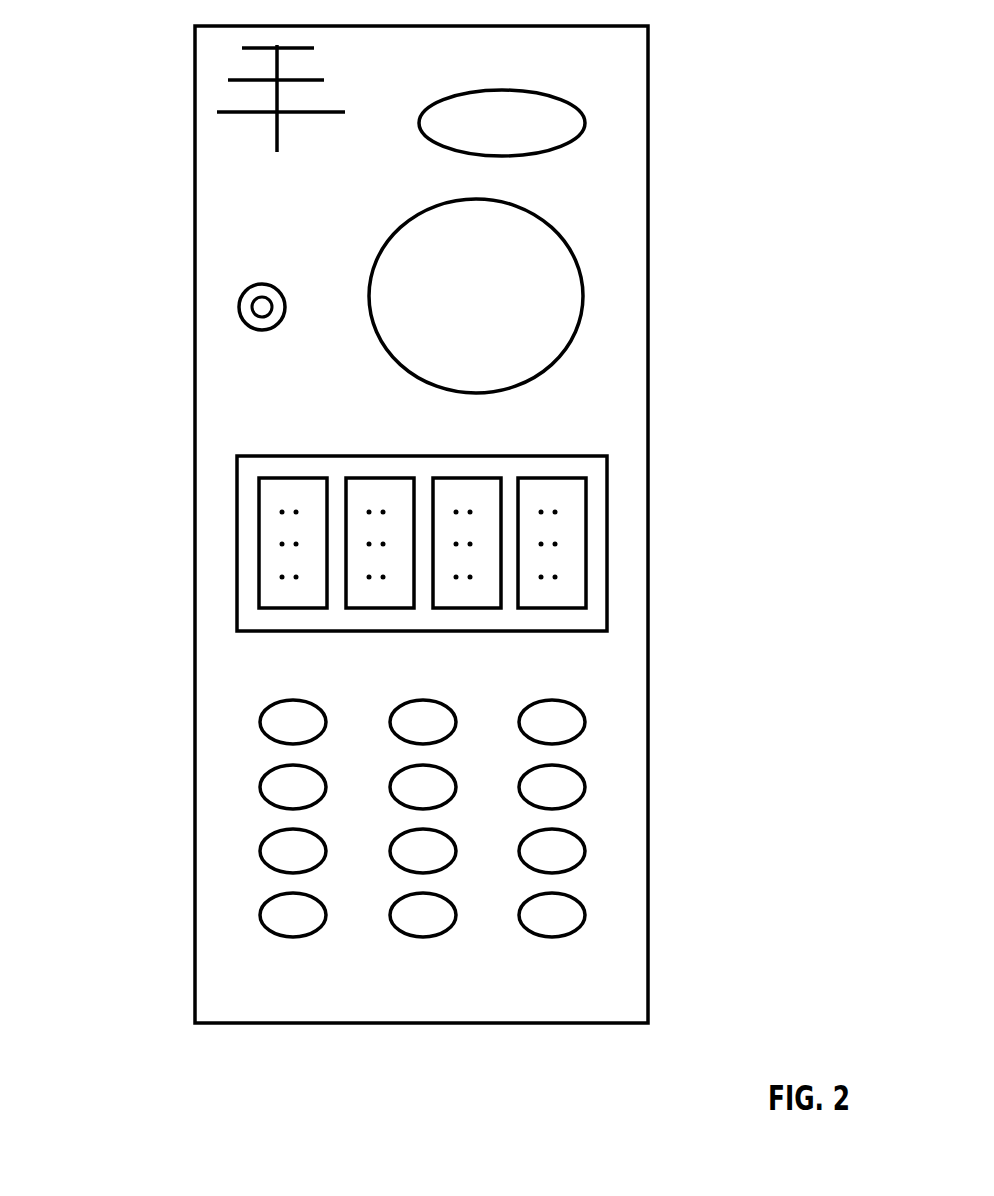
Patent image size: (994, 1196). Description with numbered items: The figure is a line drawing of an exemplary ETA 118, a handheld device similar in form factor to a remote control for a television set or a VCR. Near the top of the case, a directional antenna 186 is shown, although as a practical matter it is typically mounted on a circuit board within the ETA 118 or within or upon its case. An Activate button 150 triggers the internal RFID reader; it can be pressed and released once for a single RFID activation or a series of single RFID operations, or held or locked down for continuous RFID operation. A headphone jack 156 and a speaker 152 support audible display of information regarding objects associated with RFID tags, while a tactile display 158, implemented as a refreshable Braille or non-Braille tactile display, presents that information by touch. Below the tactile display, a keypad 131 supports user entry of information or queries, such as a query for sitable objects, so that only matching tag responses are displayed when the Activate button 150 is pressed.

The ETA 118 is at (86, 1026).
The directional antenna 186 is at (217, 112).
The Activate button 150 is at (585, 123).
The speaker 152 is at (856, 280).
The headphone jack 156 is at (244, 289).
The tactile display 158 is at (587, 543).
The keypad 131 is at (150, 701).